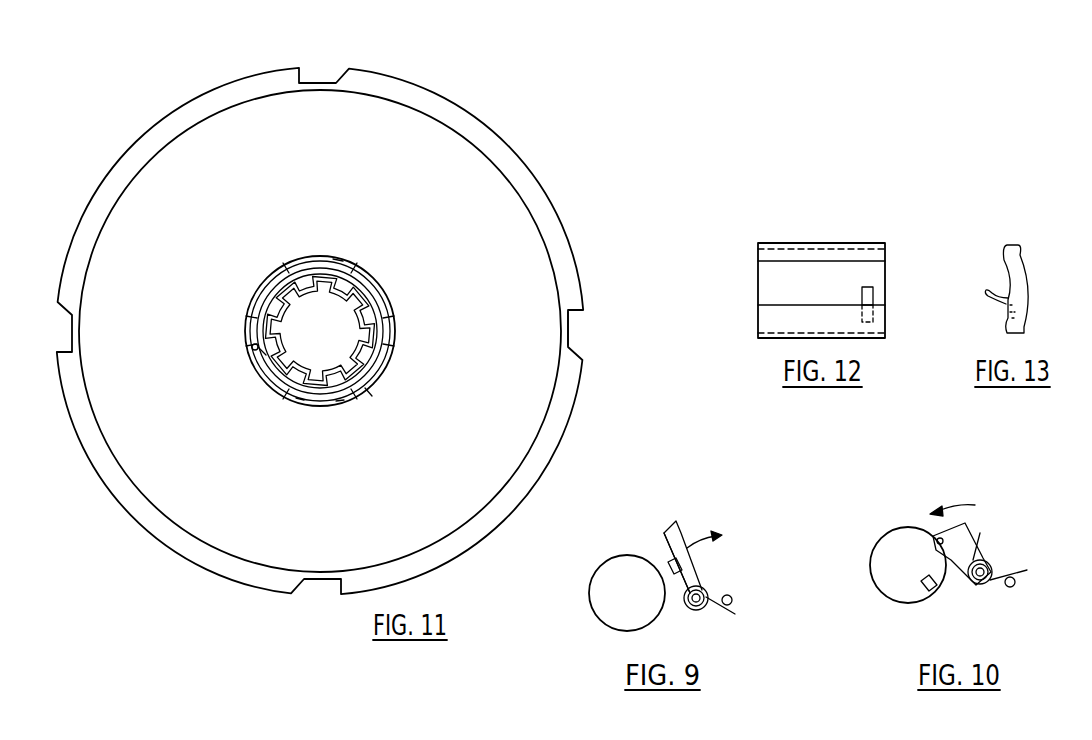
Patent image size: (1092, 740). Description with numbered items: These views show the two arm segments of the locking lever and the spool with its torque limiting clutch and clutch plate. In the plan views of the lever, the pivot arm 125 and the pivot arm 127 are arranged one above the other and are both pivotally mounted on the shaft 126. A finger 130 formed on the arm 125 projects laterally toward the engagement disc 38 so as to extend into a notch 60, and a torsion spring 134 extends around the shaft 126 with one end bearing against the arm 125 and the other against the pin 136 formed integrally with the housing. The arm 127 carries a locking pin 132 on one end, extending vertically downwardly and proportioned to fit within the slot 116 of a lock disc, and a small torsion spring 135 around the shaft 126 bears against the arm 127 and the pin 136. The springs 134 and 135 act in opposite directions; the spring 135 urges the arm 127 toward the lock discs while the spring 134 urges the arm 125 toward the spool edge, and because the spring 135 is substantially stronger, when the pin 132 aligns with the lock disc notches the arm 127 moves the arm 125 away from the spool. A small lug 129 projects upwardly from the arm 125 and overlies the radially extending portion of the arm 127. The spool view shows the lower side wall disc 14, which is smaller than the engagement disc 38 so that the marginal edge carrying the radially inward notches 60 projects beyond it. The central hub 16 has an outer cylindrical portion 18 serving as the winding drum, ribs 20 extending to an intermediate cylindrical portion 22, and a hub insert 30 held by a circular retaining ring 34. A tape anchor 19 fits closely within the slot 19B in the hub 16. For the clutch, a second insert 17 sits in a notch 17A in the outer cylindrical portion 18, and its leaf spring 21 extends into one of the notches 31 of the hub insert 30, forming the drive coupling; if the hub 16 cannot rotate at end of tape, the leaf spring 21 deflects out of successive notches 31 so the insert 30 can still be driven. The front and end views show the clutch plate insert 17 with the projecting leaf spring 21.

In FIG. 11, the lower side wall disc 14 is at (507, 190).
In FIG. 11, the engagement disc 38 is at (463, 121).
In FIG. 11, the notch 60 is at (578, 331).
In FIG. 11, the central hub 16 is at (335, 258).
In FIG. 11, the second insert 17 is at (397, 317).
In FIG. 12, the second insert 17 is at (840, 243).
In FIG. 13, the second insert 17 is at (1020, 318).
In FIG. 11, the notch 17A is at (393, 346).
In FIG. 11, the outer cylindrical portion 18 is at (390, 368).
In FIG. 11, the tape anchor 19 is at (250, 343).
In FIG. 11, the slot 19B is at (262, 353).
In FIG. 11, the ribs 20 is at (300, 399).
In FIG. 12, the leaf spring 21 is at (875, 297).
In FIG. 13, the leaf spring 21 is at (990, 300).
In FIG. 11, the intermediate cylindrical portion 22 is at (340, 401).
In FIG. 11, the hub insert 30 is at (355, 278).
In FIG. 11, the notches 31 is at (340, 268).
In FIG. 11, the circular retaining ring 34 is at (370, 389).
In FIG. 10, the slot 116 is at (928, 590).
In FIG. 9, the pivot arm 125 is at (663, 540).
In FIG. 9, the shaft 126 is at (694, 611).
In FIG. 10, the shaft 126 is at (976, 588).
In FIG. 10, the pivot arm 127 is at (965, 535).
In FIG. 9, the lug 129 is at (671, 563).
In FIG. 9, the finger 130 is at (667, 530).
In FIG. 10, the locking pin 132 is at (935, 540).
In FIG. 9, the torsion spring 134 is at (715, 595).
In FIG. 10, the torsion spring 135 is at (1003, 572).
In FIG. 9, the pin 136 is at (733, 600).
In FIG. 10, the pin 136 is at (1015, 586).